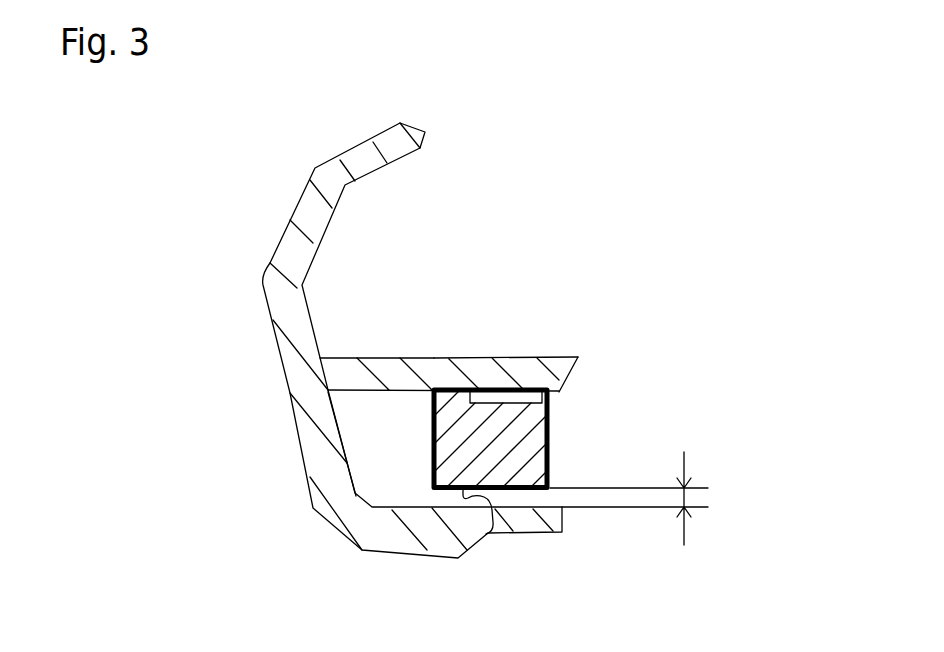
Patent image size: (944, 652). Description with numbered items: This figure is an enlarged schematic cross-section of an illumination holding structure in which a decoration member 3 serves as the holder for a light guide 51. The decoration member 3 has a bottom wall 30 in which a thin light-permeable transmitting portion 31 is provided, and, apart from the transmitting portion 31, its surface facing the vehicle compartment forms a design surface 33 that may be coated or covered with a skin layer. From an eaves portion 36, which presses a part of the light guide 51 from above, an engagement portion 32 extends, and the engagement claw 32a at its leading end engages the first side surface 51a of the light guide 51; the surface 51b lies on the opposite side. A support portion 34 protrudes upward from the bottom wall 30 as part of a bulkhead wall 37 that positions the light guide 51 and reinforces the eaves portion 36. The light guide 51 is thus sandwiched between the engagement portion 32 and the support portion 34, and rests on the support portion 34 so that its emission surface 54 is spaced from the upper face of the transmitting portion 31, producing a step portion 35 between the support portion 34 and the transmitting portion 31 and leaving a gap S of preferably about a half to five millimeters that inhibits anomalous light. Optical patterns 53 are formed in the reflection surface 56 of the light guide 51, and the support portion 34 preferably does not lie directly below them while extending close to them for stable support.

The decoration member 3 is at (284, 440).
The bottom wall 30 is at (448, 497).
The transmitting portion 31 is at (572, 515).
The engagement portion 32 is at (468, 375).
The engagement claw 32a is at (562, 395).
The design surface 33 is at (270, 267).
The support portion 34 is at (362, 550).
The step portion 35 is at (492, 532).
The eaves portion 36 is at (383, 358).
The bulkhead wall 37 is at (402, 358).
The light guide 51 is at (538, 470).
The first side surface 51a is at (550, 446).
The inner surface of seal member 51b is at (388, 418).
The optical patterns (prisms) 53 is at (527, 382).
The emission surface 54 is at (503, 489).
The reflection surface 56 is at (483, 390).
The gap S is at (687, 495).